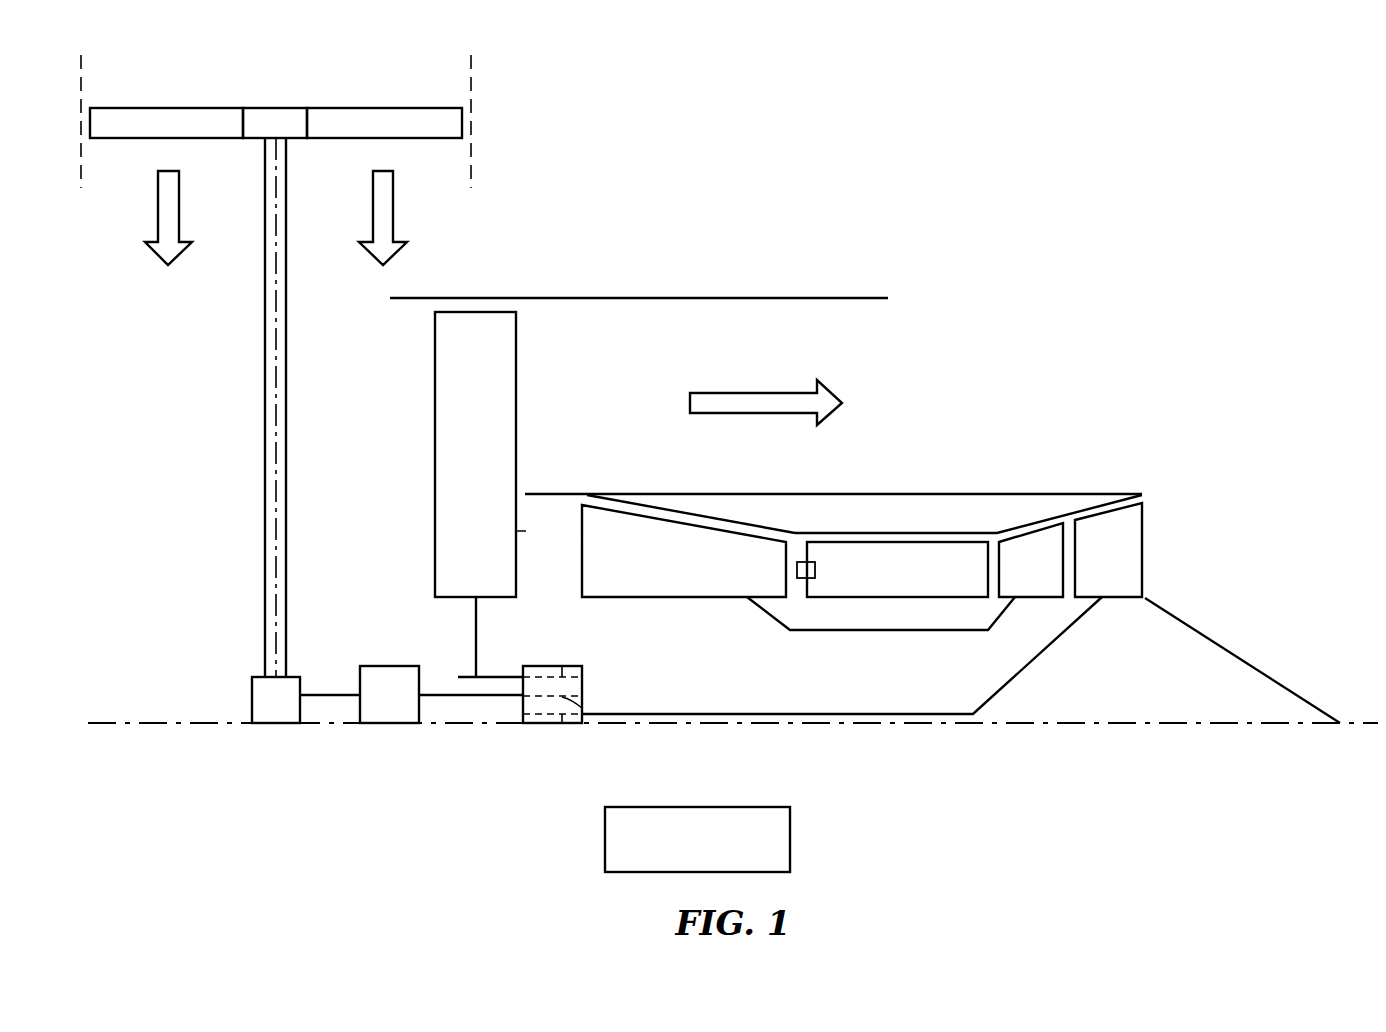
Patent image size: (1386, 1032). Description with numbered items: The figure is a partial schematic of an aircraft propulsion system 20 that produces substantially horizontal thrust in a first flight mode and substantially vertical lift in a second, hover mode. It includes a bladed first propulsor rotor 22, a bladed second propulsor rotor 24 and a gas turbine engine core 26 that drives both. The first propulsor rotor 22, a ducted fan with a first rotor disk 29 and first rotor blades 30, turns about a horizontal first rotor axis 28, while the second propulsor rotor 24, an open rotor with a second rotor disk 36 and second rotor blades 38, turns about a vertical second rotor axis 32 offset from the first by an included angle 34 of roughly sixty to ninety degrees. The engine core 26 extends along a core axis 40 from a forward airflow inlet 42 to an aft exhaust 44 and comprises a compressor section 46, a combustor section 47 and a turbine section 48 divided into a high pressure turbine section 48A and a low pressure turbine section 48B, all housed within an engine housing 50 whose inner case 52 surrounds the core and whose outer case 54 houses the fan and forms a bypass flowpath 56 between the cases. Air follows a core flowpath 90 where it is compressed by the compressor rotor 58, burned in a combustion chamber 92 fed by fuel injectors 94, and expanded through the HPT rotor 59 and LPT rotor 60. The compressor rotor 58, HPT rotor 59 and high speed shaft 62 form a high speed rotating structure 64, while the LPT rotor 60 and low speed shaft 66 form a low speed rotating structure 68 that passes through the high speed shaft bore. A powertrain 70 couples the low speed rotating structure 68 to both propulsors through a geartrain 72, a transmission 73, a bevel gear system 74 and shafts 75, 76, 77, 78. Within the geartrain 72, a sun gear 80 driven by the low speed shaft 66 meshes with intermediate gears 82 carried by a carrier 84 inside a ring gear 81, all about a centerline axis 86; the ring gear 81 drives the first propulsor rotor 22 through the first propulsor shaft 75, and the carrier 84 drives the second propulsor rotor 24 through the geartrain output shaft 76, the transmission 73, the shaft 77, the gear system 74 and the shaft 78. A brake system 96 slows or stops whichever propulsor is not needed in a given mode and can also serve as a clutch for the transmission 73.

The aircraft propulsion system 20 is at (1130, 161).
The first propulsor rotor 22 is at (434, 494).
The second propulsor rotor 24 is at (276, 139).
The gas turbine engine core 26 is at (932, 588).
The first rotor axis 28 is at (737, 770).
The first rotor disk 29 is at (476, 640).
The first rotor blades 30 is at (435, 436).
The second rotor axis 32 is at (232, 407).
The included angle 34 is at (270, 592).
The second rotor disk 36 is at (276, 108).
The second rotor blades 38 is at (168, 108).
The core axis 40 is at (737, 770).
The airflow inlet 42 is at (516, 531).
The exhaust 44 is at (1162, 562).
The compressor section 46 is at (703, 525).
The combustor section 47 is at (920, 532).
The turbine section 48 is at (1066, 520).
The high pressure turbine section 48A is at (1024, 547).
The low pressure turbine section 48B is at (1106, 550).
The engine housing 50 is at (647, 304).
The inner case 52 is at (863, 493).
The outer case 54 is at (680, 296).
The bypass flowpath 56 is at (604, 377).
The compressor rotor 58 is at (653, 597).
The HPT rotor 59 is at (1035, 597).
The LPT rotor 60 is at (1122, 597).
The high speed shaft 62 is at (887, 630).
The high speed rotating structure 64 is at (785, 638).
The low speed shaft 66 is at (737, 770).
The low speed rotating structure 68 is at (954, 723).
The powertrain 70 is at (471, 729).
The geartrain 72 is at (609, 710).
The transmission 73 is at (390, 729).
The gear system 74 is at (268, 729).
The first propulsor shaft 75 is at (505, 676).
The geartrain output shaft 76 is at (467, 695).
The shaft 77 is at (325, 695).
The shaft 78 is at (265, 485).
The sun gear 80 is at (567, 724).
The ring gear 81 is at (562, 665).
The intermediate gears 82 is at (609, 692).
The carrier 84 is at (584, 707).
The centerline axis 86 is at (1363, 725).
The core flowpath 90 is at (538, 569).
The combustion chamber 92 is at (931, 586).
The fuel injectors 94 is at (815, 571).
The brake system 96 is at (790, 838).